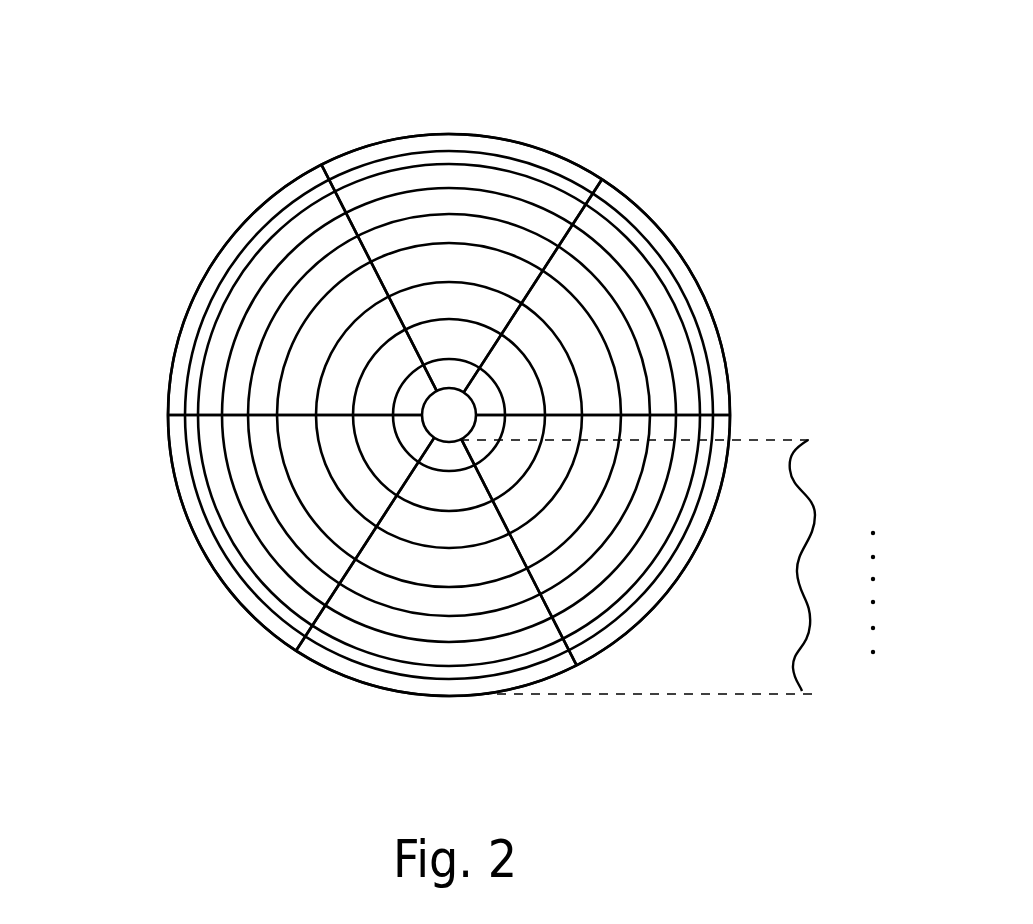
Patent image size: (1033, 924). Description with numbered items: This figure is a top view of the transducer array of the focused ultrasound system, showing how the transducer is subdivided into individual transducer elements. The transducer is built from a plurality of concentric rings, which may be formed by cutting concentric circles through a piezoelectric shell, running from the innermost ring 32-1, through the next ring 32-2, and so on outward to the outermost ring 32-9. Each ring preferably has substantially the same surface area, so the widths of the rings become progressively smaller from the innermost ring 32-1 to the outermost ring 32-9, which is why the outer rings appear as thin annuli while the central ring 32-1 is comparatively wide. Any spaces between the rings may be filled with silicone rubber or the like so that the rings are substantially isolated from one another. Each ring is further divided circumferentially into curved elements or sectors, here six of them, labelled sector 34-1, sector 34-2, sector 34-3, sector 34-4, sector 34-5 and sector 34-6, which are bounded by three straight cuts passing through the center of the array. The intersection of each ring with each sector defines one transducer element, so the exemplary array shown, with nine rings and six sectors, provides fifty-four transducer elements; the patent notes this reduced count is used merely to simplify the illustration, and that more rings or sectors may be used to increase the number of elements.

The sector 34-1 is at (445, 131).
The sector 34-2 is at (688, 260).
The sector 34-3 is at (739, 428).
The sector 34-4 is at (412, 699).
The sector 34-5 is at (191, 542).
The sector 34-6 is at (215, 250).
The innermost ring 32-1 is at (645, 419).
The concentric ring 32-2 is at (625, 415).
The outermost ring 32-9 is at (532, 415).